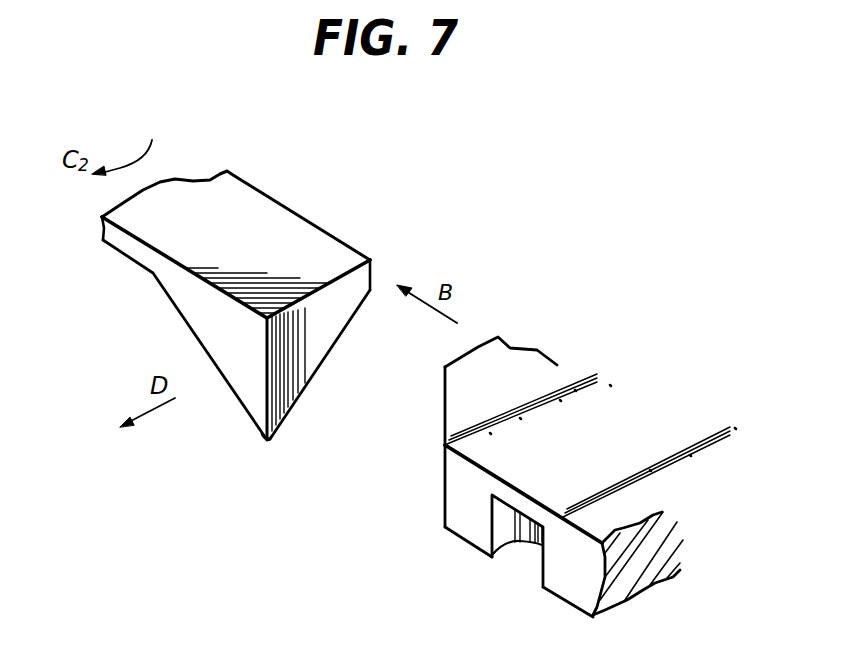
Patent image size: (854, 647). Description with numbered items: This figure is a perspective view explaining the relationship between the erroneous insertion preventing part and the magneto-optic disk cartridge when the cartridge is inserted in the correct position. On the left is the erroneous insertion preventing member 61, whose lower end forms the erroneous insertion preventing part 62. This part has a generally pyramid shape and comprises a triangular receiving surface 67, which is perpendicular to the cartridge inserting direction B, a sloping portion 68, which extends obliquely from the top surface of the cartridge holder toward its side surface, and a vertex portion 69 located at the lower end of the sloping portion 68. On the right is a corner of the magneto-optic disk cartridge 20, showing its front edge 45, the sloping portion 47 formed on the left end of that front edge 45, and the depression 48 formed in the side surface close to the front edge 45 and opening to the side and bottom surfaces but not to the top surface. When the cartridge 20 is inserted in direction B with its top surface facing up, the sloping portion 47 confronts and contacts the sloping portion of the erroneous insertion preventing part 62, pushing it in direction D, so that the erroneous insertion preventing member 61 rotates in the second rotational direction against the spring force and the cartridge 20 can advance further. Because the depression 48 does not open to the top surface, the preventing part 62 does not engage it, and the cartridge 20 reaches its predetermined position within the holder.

The magneto-optic disk cartridge 20 is at (554, 455).
The front edge 45 is at (478, 347).
The sloping portion 47 is at (445, 415).
The depression 48 is at (540, 568).
The erroneous insertion preventing member 61 is at (255, 310).
The erroneous insertion preventing part 62 is at (247, 427).
The triangular receiving surface 67 is at (287, 377).
The sloping portion 68 is at (330, 353).
The vertex portion 69 is at (273, 443).